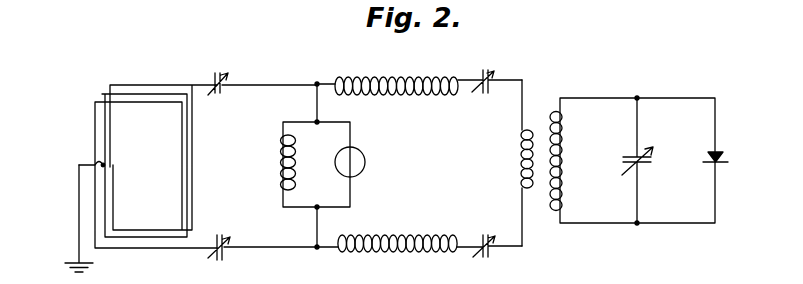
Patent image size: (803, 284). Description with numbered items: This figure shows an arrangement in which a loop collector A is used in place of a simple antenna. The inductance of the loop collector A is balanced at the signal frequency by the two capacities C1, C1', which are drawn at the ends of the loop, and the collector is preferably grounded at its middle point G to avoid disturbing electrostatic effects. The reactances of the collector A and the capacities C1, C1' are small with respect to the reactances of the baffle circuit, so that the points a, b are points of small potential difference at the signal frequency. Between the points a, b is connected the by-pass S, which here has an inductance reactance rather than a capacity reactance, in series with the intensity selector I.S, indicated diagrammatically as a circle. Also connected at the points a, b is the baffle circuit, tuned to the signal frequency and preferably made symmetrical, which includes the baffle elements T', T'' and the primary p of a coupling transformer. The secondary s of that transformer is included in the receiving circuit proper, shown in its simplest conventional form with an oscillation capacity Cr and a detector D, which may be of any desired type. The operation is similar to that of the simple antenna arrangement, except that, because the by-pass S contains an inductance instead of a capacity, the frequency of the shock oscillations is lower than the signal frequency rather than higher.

The loop collector A is at (139, 166).
The middle point ground G is at (73, 218).
The capacity C1 is at (262, 97).
The capacity C1' is at (262, 233).
The connection point a is at (321, 72).
The connection point b is at (323, 260).
The by-pass S is at (303, 165).
The intensity selector I.S is at (350, 162).
The baffle element T' is at (428, 74).
The baffle element T'' is at (430, 255).
The primary p is at (513, 163).
The secondary s is at (632, 160).
The oscillation capacity Cr is at (652, 160).
The detector D is at (725, 155).